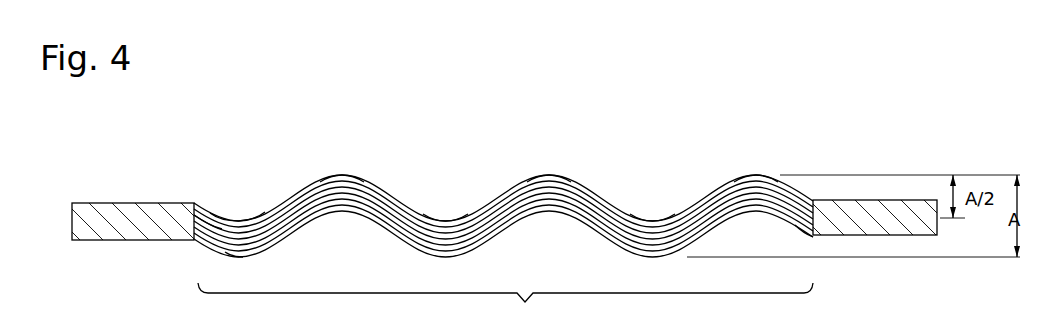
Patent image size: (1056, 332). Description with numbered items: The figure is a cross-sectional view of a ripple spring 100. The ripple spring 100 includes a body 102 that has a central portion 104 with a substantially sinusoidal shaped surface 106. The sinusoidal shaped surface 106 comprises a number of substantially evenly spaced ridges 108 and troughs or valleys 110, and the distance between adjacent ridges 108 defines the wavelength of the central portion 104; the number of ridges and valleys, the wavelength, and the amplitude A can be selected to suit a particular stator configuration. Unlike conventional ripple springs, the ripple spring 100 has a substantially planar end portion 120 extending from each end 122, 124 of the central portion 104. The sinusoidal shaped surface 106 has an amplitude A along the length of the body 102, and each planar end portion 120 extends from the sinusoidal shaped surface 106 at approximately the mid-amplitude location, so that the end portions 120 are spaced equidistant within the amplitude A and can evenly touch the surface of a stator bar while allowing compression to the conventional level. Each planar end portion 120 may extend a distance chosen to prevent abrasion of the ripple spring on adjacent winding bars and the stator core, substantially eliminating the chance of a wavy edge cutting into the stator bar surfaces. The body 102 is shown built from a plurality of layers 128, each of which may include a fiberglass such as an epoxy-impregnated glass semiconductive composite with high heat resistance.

The ripple spring 100 is at (187, 178).
The body 102 is at (148, 201).
The central portion 104 is at (505, 307).
The substantially sinusoidal shaped surface 106 is at (236, 219).
The ridges 108 is at (335, 174).
The troughs or valleys 110 is at (441, 220).
The substantially planar end portion 120 is at (117, 216).
The end of central portion 122 is at (215, 232).
The end of central portion 124 is at (807, 232).
The layers 128 is at (252, 255).